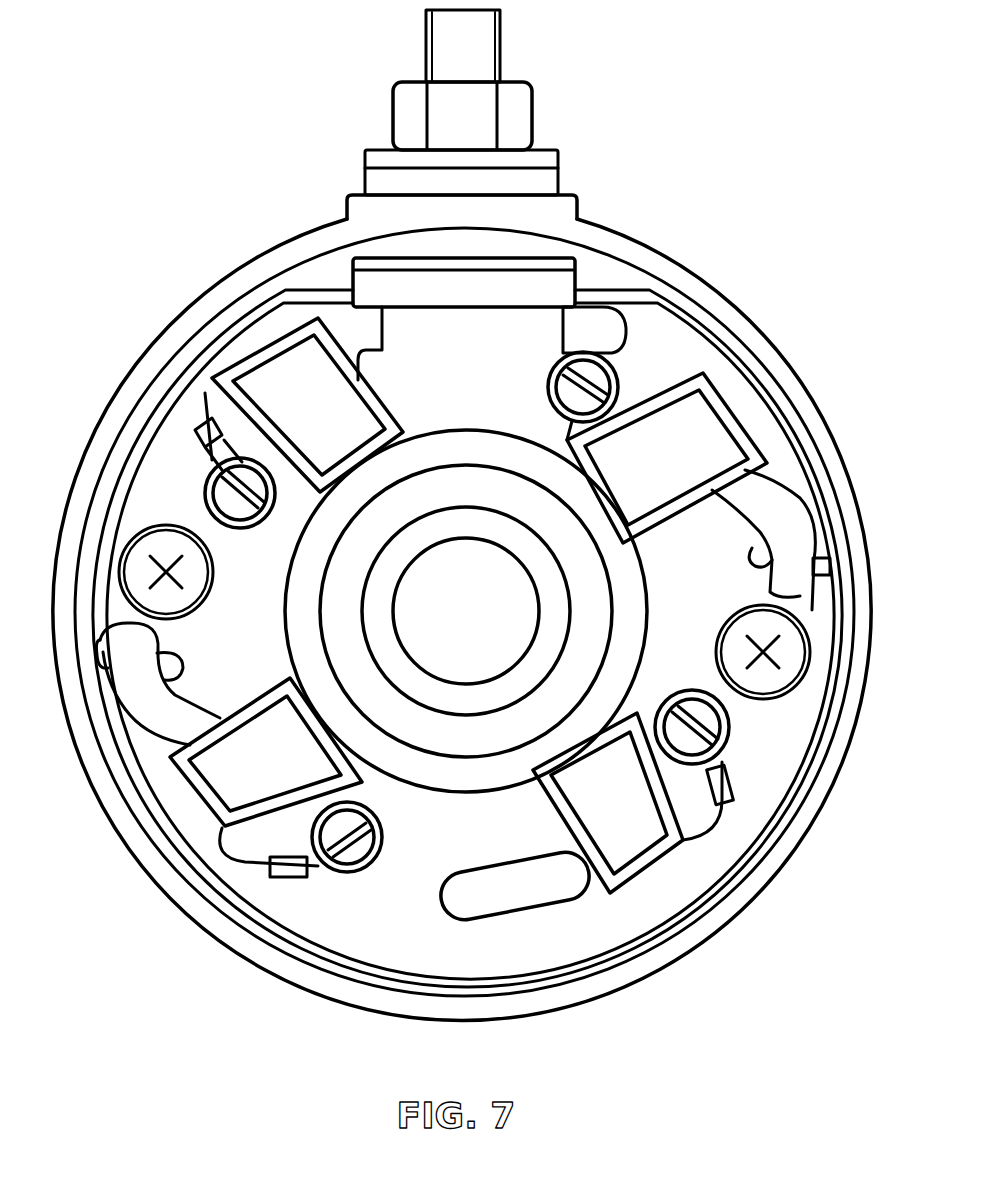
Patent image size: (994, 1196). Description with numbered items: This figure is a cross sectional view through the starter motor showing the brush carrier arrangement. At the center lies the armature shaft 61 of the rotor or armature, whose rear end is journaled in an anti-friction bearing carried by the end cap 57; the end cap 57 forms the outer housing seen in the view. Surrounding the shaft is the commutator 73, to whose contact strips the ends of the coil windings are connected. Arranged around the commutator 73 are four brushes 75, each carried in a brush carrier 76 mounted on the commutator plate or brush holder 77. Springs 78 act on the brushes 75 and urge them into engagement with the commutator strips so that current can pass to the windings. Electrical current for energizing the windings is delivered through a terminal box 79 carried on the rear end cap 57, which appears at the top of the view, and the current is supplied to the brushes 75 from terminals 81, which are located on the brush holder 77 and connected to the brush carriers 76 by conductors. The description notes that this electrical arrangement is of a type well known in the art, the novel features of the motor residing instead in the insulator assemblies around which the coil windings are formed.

The end cap 57 is at (624, 247).
The armature shaft 61 is at (470, 665).
The commutator 73 is at (411, 793).
The brushes 75 is at (408, 437).
The brush carriers 76 is at (468, 564).
The commutator plate or brush holder 77 is at (770, 805).
The springs 78 is at (708, 378).
The terminal box 79 is at (502, 50).
The terminals 81 is at (168, 543).